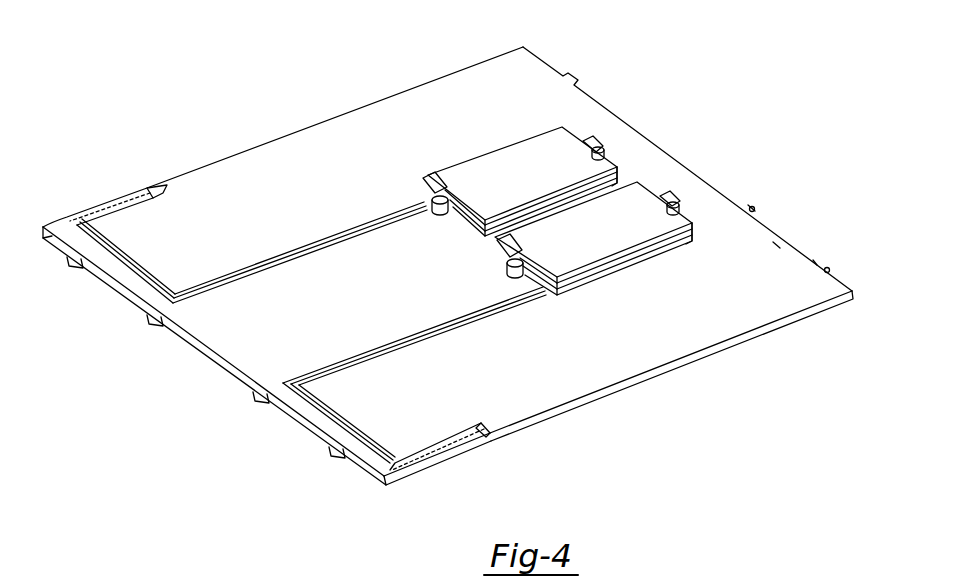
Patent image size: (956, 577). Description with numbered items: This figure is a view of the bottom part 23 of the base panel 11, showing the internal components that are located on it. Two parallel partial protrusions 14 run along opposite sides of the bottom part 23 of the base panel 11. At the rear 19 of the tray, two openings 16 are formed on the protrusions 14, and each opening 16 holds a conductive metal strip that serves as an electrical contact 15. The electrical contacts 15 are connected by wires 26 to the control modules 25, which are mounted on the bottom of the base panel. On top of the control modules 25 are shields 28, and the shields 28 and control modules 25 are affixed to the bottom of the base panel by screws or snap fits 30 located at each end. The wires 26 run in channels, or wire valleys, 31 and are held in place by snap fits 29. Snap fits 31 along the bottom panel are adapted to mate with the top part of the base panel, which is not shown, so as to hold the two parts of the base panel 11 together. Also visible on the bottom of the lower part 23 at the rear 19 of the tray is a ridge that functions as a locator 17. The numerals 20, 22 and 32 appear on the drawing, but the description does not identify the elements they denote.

The base panel 11 is at (831, 306).
The partial protrusions 14 is at (43, 227).
The electrical contacts 15 is at (90, 204).
The openings 16 is at (148, 186).
The locator 17 is at (213, 367).
The rear 19 is at (157, 340).
The aperture 20 is at (750, 205).
The front edge 22 is at (577, 403).
The bottom part 23 is at (777, 245).
The control modules 25 is at (612, 182).
The wires 26 is at (134, 261).
The shields 28 is at (507, 160).
The snap fits 29 is at (367, 227).
The screws or snap fits 30 is at (433, 184).
The channels (wire valley) 31 is at (147, 317).
The rail 32 is at (317, 248).